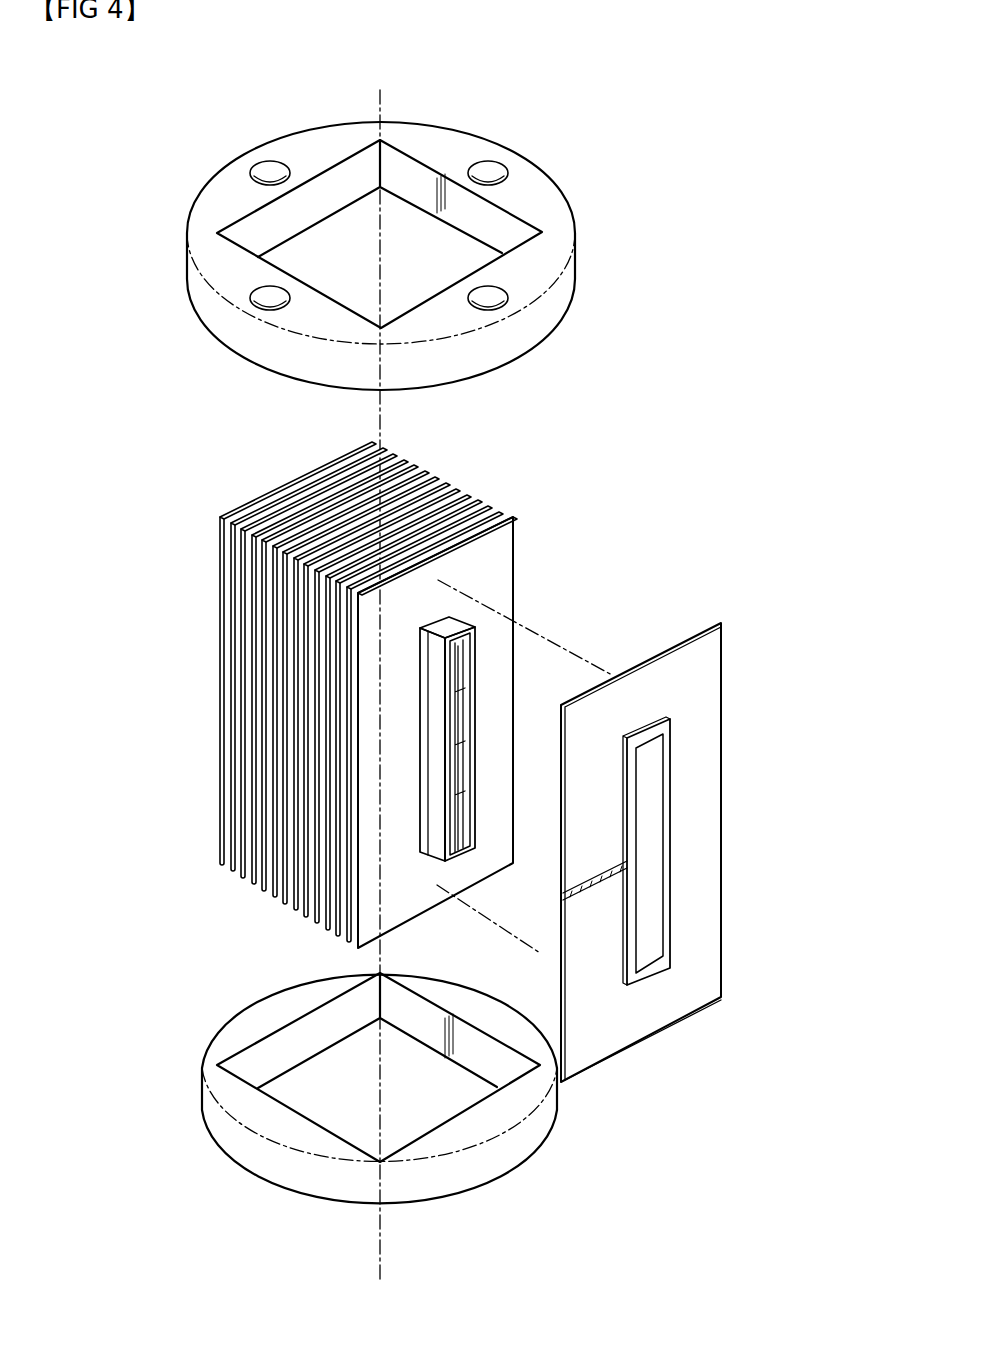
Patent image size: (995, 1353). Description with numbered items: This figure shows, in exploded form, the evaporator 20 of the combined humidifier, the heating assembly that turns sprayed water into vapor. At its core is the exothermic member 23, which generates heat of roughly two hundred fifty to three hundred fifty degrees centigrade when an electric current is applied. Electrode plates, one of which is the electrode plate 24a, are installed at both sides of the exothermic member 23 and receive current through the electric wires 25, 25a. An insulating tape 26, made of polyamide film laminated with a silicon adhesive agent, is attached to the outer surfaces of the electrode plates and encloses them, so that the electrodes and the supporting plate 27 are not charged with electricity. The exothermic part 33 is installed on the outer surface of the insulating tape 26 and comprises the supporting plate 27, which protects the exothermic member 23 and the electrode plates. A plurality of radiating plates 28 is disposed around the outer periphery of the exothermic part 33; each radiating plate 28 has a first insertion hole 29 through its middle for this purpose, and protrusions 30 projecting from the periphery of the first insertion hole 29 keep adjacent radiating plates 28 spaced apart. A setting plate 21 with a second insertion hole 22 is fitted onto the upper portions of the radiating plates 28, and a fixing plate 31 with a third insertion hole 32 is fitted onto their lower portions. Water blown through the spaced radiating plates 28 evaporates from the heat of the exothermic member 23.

The evaporator 20 is at (534, 468).
The setting plate 21 is at (200, 250).
The second insertion hole 22 is at (457, 253).
The exothermic member 23 is at (460, 830).
The electrode plate 24a is at (513, 640).
The electric wire 25 is at (218, 558).
The electric wire 25a is at (218, 522).
The insulating tape 26 is at (470, 713).
The supporting plate 27 is at (478, 630).
The radiating plate 28 is at (513, 540).
The first insertion hole 29 is at (649, 814).
The protrusion 30 is at (450, 617).
The fixing plate 31 is at (232, 1103).
The third insertion hole 32 is at (300, 1085).
The exothermic part 33 is at (418, 808).